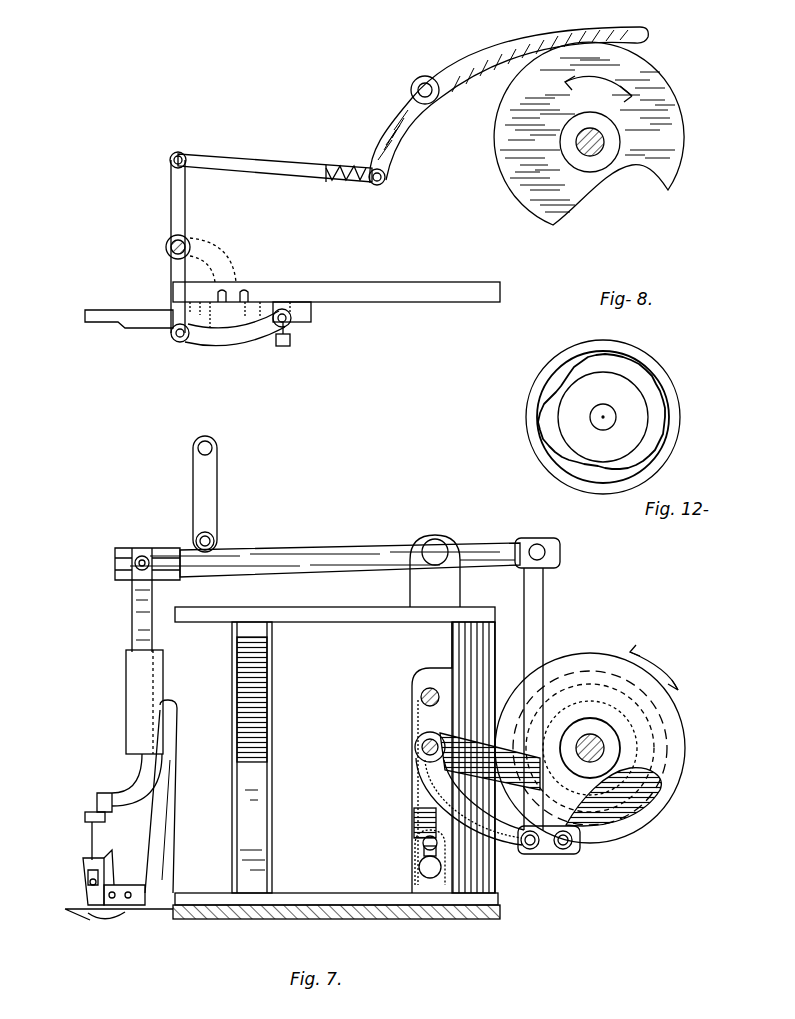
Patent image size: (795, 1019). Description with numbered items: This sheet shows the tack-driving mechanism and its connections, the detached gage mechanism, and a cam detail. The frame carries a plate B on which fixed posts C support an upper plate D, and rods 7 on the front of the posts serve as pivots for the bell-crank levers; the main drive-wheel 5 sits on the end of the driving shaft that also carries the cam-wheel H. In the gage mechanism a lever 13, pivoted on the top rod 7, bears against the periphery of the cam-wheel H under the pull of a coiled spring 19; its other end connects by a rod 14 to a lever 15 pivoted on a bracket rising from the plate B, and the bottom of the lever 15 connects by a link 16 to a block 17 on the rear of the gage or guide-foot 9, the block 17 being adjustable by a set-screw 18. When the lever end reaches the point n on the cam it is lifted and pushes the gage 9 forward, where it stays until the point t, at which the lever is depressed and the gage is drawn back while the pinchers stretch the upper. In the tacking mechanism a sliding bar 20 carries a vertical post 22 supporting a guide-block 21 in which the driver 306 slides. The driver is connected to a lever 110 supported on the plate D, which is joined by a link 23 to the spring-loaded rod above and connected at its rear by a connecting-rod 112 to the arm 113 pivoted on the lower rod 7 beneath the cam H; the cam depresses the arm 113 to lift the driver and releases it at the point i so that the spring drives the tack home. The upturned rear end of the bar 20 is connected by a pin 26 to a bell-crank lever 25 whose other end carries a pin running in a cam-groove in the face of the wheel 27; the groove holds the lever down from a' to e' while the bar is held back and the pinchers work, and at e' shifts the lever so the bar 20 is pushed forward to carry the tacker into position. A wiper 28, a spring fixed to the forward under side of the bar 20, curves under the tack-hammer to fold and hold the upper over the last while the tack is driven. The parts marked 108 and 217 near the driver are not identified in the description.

In FIG. 7, the main drive-wheel 5 is at (272, 775).
In FIG. 8, the rods 7 is at (414, 82).
In FIG. 7, the rods 7 is at (421, 695).
In FIG. 8, the gage or guide-foot 9 is at (122, 326).
In FIG. 8, the lever 13 is at (480, 54).
In FIG. 8, the rod 14 is at (290, 162).
In FIG. 8, the lever 15 is at (170, 228).
In FIG. 8, the link 16 is at (228, 345).
In FIG. 8, the block 17 is at (300, 334).
In FIG. 8, the set-screw 18 is at (283, 348).
In FIG. 8, the coiled spring 19 is at (356, 182).
In FIG. 7, the sliding bar 20 is at (190, 893).
In FIG. 7, the guide-block 21 is at (124, 690).
In FIG. 7, the vertical post 22 is at (177, 795).
In FIG. 7, the link 23 is at (193, 490).
In FIG. 7, the bell-crank lever 25 is at (412, 818).
In FIG. 7, the pin 26 is at (420, 868).
In FIG. 12, the cam-wheel 27 is at (683, 424).
In FIG. 7, the cam-wheel 27 is at (626, 812).
In FIG. 7, the wiper 28 is at (105, 922).
In FIG. 7, the bracket 108 is at (112, 858).
In FIG. 7, the lever 110 is at (350, 548).
In FIG. 7, the connecting-rod 112 is at (544, 604).
In FIG. 7, the rod or arm 113 is at (552, 856).
In FIG. 7, the foot 217 is at (85, 906).
In FIG. 7, the driver 306 is at (92, 846).
In FIG. 8, the plate B is at (398, 282).
In FIG. 7, the fixed posts C is at (453, 757).
In FIG. 7, the upper plate D is at (335, 603).
In FIG. 8, the cam-wheel H is at (680, 100).
In FIG. 7, the cam-wheel H is at (684, 744).
In FIG. 8, the point on cam H t is at (670, 194).
In FIG. 7, the point on cam H t is at (544, 856).
In FIG. 8, the point on cam H n is at (554, 226).
In FIG. 7, the point on cam H i is at (662, 790).
In FIG. 12, the point on cam-groove e' is at (587, 411).
In FIG. 12, the point on cam-groove a' is at (585, 497).